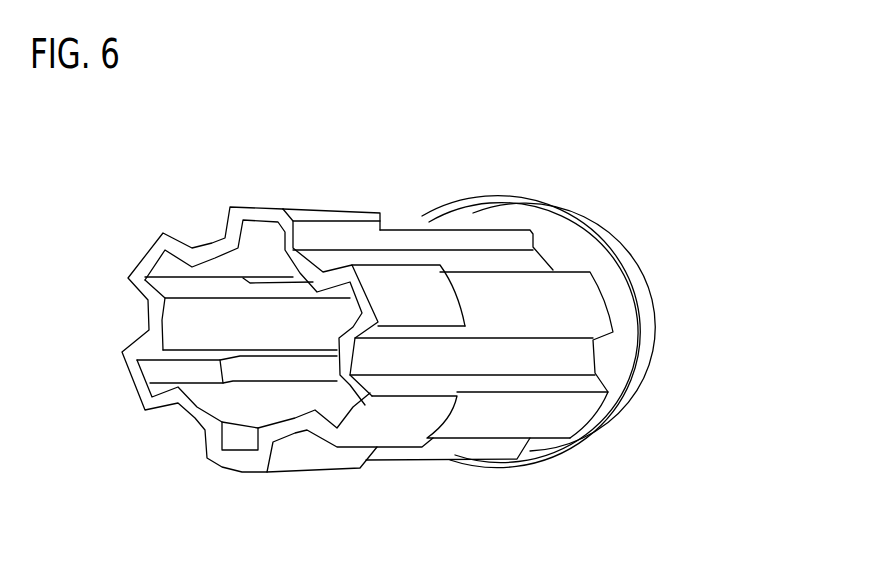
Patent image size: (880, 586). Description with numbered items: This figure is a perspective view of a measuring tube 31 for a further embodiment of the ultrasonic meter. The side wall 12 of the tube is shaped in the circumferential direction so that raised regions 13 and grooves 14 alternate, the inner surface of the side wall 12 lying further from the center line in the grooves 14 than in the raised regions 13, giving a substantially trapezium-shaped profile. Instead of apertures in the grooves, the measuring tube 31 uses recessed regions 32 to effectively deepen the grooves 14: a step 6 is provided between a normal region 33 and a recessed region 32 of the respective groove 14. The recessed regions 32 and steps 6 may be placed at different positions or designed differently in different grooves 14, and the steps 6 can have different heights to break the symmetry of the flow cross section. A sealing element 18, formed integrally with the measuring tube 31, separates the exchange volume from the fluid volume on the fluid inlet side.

The measuring tube 31 is at (390, 344).
The recessed region 32 is at (152, 380).
The normal region 33 is at (260, 367).
The step 6 is at (227, 363).
The side wall 12 is at (262, 217).
The raised region 13 is at (332, 262).
The groove 14 is at (568, 295).
The sealing element 18 is at (567, 245).